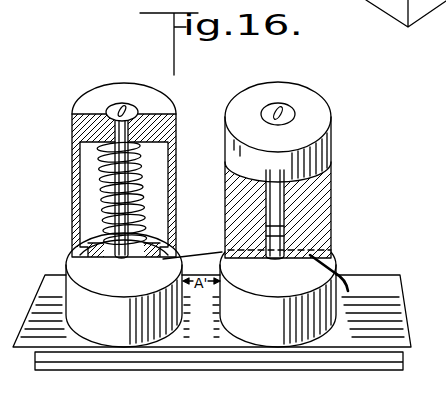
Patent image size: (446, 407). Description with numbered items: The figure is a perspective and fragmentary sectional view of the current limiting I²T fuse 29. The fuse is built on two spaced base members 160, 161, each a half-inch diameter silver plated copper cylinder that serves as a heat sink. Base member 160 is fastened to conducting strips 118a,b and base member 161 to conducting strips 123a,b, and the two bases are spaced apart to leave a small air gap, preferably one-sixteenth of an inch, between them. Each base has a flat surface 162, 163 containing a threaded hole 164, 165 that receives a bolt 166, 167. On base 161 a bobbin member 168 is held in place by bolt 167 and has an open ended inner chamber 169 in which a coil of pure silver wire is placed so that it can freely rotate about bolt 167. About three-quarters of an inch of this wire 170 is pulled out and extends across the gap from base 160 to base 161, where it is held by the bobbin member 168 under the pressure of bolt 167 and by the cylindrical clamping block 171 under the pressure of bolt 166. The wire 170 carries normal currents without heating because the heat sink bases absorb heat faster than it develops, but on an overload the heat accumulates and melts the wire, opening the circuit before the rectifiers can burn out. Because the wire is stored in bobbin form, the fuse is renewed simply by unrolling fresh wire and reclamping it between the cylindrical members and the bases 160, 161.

The I²T fuse 29 is at (211, 121).
The conducting strips 118a,b is at (360, 351).
The conducting strips 123a,b is at (62, 352).
The base member 160 is at (278, 333).
The base member 161 is at (125, 333).
The flat surface 162 is at (330, 257).
The flat surface 163 is at (83, 270).
The threaded hole 164 is at (285, 233).
The threaded hole 165 is at (167, 236).
The bolt 166 is at (289, 112).
The bolt 167 is at (137, 125).
The bobbin member 168 is at (72, 183).
The inner chamber 169 is at (90, 164).
The wire 170 is at (201, 247).
The cylindrical clamping block 171 is at (323, 181).